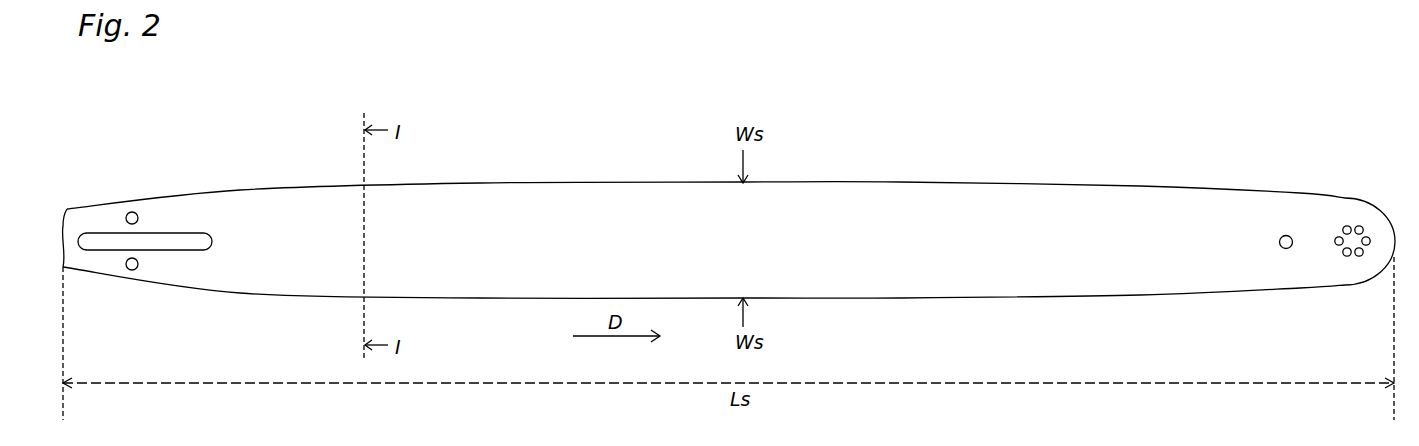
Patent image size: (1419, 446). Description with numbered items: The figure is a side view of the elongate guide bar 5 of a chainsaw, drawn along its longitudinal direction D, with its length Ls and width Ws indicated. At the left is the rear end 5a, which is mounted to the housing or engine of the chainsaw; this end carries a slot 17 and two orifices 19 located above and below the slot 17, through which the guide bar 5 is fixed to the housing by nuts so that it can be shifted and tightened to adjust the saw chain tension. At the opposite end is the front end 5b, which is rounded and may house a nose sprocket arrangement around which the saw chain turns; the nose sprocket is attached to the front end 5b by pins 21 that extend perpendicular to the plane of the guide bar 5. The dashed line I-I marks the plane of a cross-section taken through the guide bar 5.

The guide bar 5 is at (632, 112).
The rear end 5a is at (112, 175).
The front end 5b is at (1290, 158).
The slot 17 is at (92, 237).
The orifices 19 is at (132, 212).
The pins 21 is at (1359, 256).